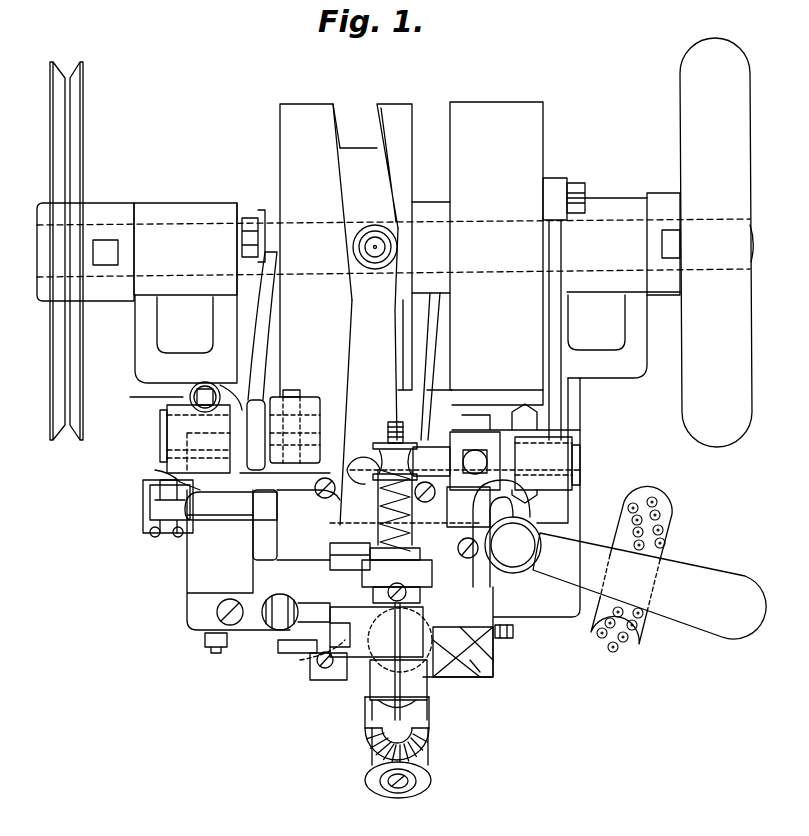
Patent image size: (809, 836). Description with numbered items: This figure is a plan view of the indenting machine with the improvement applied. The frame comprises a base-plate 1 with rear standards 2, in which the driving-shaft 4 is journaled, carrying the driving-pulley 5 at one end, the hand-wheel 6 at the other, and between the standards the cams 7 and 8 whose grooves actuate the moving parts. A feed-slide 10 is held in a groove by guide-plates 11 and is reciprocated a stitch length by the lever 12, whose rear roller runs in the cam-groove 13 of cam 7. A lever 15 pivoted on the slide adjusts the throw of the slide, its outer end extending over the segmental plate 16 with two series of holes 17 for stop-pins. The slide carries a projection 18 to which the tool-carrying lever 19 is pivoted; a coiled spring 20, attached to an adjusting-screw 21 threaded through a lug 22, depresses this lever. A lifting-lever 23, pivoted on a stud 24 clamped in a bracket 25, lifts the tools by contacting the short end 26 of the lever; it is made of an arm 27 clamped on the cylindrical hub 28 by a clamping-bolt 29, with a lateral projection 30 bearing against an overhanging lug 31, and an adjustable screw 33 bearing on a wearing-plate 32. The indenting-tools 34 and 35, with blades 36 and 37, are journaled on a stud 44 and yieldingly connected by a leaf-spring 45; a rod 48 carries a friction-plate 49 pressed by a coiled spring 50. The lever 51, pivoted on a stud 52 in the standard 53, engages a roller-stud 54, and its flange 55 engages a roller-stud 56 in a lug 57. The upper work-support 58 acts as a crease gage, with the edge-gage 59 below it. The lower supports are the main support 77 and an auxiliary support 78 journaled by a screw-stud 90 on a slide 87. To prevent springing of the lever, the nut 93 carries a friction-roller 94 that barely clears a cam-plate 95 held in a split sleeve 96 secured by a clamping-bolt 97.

The base-plate 1 is at (552, 620).
The rear standards 2 is at (172, 204).
The driving-shaft 4 is at (35, 268).
The driving-pulley 5 is at (84, 84).
The hand-wheel 6 is at (744, 84).
The cam 7 is at (318, 100).
The cam 8 is at (483, 101).
The feed-slide 10 is at (187, 572).
The guide-plates 11 is at (187, 613).
The lever 12 is at (396, 375).
The cam-groove 13 is at (334, 125).
The lever 15 is at (649, 586).
The segmental plate 16 is at (663, 503).
The holes 17 is at (660, 527).
The projection 18 is at (229, 530).
The tool-carrying lever 19 is at (240, 557).
The coiled spring 20 is at (307, 653).
The adjusting-screw 21 is at (260, 630).
The lug 22 is at (280, 637).
The lifting-lever 23 is at (272, 320).
The stud 24 is at (160, 432).
The bracket 25 is at (301, 400).
The short end 26 is at (220, 512).
The arm 27 is at (160, 475).
The cylindrical hub 28 is at (167, 407).
The clamping-bolt 29 is at (192, 387).
The lateral projection 30 is at (216, 383).
The overhanging lug 31 is at (255, 412).
The wearing-plate 32 is at (146, 524).
The adjustable screw 33 is at (158, 490).
The indenting-tool 34 is at (432, 697).
The indenting-tool 35 is at (393, 693).
The indenting blade 36 is at (426, 712).
The indenting blade 37 is at (392, 723).
The stud 44 is at (370, 675).
The leaf-spring 45 is at (376, 632).
The rod 48 is at (393, 422).
The friction-plate 49 is at (373, 540).
The coiled spring 50 is at (380, 497).
The lever 51 is at (560, 422).
The stud 52 is at (583, 466).
The standard 53 is at (513, 471).
The roller-stud 54 is at (498, 596).
The flange 55 is at (497, 637).
The roller-stud 56 is at (487, 667).
The lug 57 is at (473, 668).
The upper work-support 58 is at (513, 630).
The edge-gage 59 is at (330, 690).
The main support 77 is at (429, 733).
The auxiliary support 78 is at (430, 770).
The slide 87 is at (429, 753).
The screw-stud 90 is at (408, 787).
The nut 93 is at (413, 530).
The friction-roller 94 is at (387, 443).
The cam-plate 95 is at (422, 447).
The split sleeve 96 is at (435, 447).
The clamping-bolt 97 is at (405, 422).